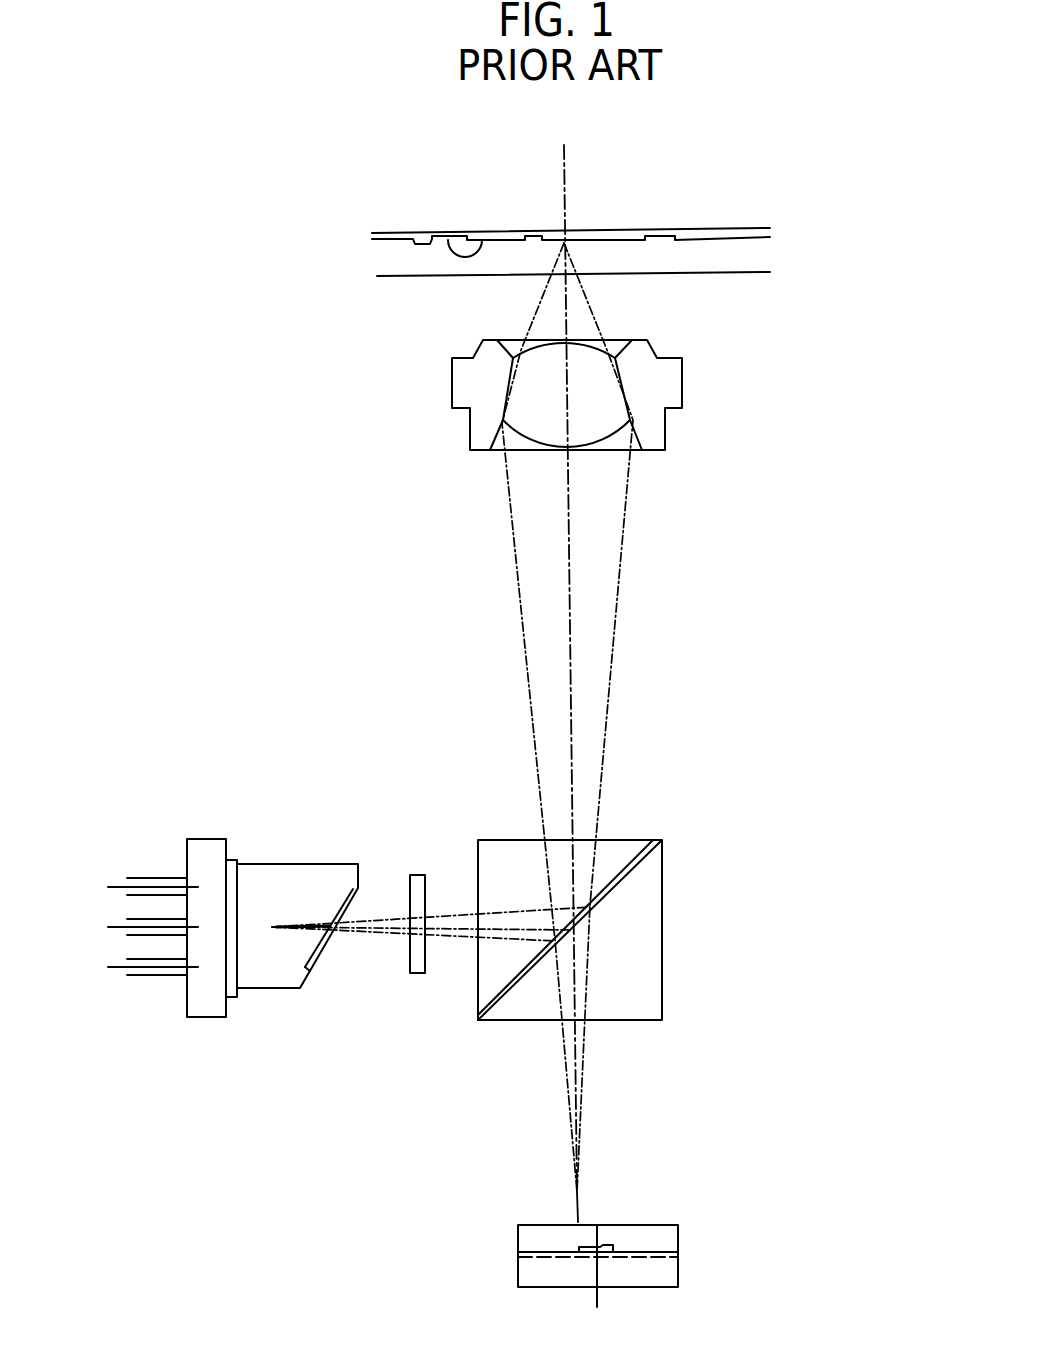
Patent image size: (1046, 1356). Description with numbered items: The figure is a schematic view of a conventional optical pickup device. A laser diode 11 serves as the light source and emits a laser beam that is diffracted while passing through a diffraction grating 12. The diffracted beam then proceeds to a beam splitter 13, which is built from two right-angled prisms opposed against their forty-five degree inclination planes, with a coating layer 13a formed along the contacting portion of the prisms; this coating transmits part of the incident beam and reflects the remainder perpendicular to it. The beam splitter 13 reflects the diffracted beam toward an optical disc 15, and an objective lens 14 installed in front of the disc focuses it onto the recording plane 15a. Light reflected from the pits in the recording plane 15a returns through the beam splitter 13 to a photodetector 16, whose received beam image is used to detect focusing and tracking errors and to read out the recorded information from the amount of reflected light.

The laser diode 11 is at (280, 875).
The diffraction grating 12 is at (418, 882).
The beam splitter 13 is at (663, 900).
The coating layer 13a is at (640, 847).
The objective lens 14 is at (462, 383).
The optical disc 15 is at (402, 257).
The recording plane 15a is at (481, 240).
The photodetector 16 is at (653, 1242).